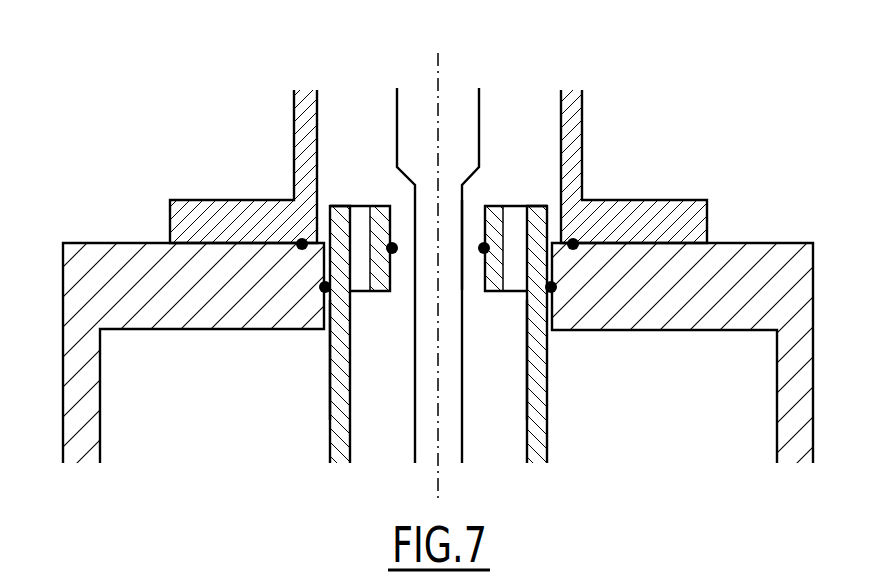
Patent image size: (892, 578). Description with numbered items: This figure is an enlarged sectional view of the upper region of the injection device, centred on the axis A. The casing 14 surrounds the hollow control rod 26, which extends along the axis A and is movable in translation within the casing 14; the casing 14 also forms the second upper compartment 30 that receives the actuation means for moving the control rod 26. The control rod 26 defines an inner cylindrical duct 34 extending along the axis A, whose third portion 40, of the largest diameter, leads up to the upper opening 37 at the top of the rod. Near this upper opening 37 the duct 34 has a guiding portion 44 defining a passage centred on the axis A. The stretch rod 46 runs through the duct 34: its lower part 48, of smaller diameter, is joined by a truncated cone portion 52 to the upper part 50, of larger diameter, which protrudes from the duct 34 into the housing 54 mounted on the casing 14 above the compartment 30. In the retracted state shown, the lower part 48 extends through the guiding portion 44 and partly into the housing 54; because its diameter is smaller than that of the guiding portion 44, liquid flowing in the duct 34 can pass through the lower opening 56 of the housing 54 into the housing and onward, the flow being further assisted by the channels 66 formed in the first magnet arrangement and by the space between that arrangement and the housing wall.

The casing 14 is at (793, 403).
The hollow control rod 26 is at (340, 408).
The second upper compartment 30 is at (167, 380).
The inner cylindrical duct 34 is at (495, 388).
The upper opening 37 is at (473, 223).
The third portion 40 is at (502, 357).
The guiding portion 44 is at (383, 213).
The stretch rod 46 is at (448, 425).
The lower part 48 is at (345, 358).
The upper part 50 is at (413, 132).
The truncated cone portion 52 is at (476, 180).
The housing 54 is at (572, 145).
The lower opening 56 is at (527, 192).
The channels 66 is at (362, 223).
The axis A is at (438, 80).